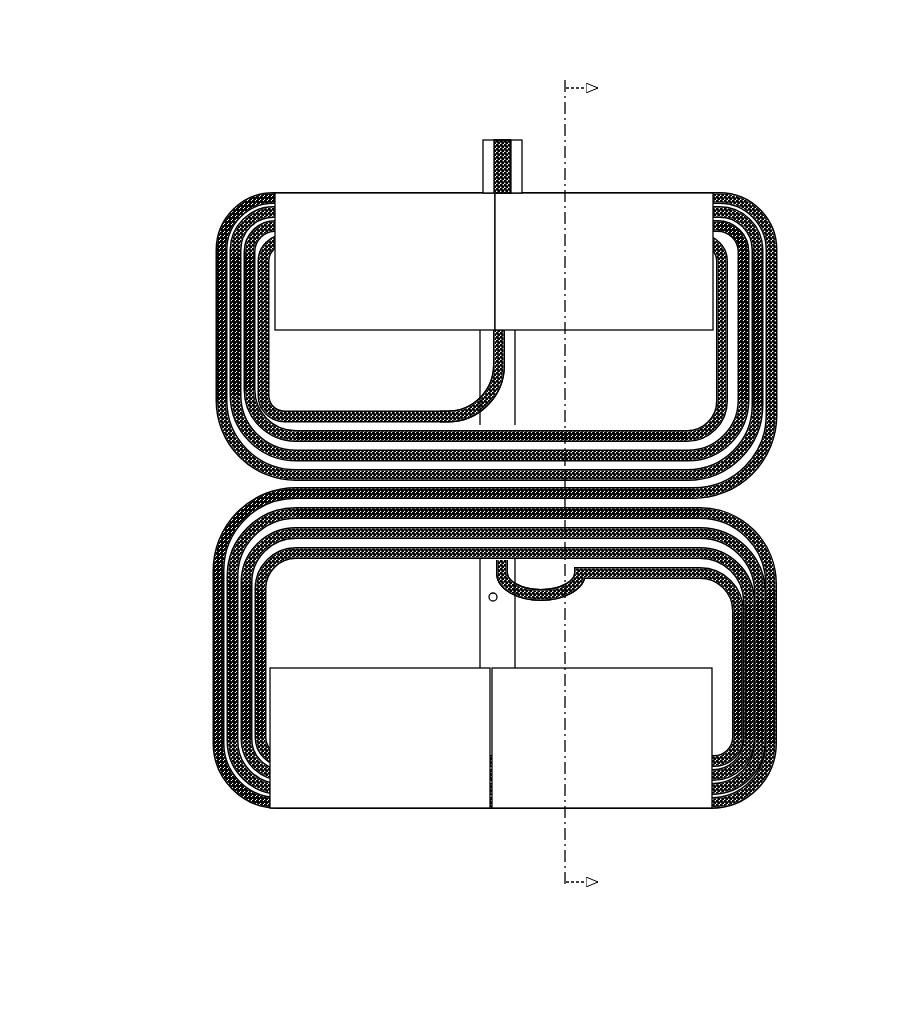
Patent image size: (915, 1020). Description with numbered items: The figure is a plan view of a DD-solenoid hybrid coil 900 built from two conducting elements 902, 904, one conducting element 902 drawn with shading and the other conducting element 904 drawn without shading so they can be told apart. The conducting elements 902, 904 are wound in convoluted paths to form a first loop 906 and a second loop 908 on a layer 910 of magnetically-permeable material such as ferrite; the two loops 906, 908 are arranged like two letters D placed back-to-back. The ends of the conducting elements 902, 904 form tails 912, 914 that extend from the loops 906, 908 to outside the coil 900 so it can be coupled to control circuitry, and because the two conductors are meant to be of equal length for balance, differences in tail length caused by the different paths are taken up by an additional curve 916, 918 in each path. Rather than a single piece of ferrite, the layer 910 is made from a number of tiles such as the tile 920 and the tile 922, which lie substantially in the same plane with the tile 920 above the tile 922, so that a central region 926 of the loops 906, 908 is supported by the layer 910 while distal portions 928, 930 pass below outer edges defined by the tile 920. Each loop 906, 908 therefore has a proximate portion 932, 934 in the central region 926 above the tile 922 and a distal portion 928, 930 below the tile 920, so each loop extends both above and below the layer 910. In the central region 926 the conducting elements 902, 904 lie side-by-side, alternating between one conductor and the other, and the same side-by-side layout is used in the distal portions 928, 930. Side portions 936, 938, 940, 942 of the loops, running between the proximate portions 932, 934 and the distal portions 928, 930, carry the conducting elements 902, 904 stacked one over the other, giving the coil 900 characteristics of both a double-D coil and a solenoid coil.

The DD-solenoid hybrid coil 900 is at (778, 70).
The conducting element 902 is at (218, 577).
The conducting element 904 is at (222, 300).
The first loop 906 is at (467, 630).
The second loop 908 is at (477, 332).
The layer of magnetically-permeable material 910 is at (378, 250).
The tail 912 is at (484, 150).
The tail 914 is at (498, 138).
The additional curve 916 is at (578, 593).
The additional curve 918 is at (464, 392).
The ferrite tile 920 is at (620, 270).
The ferrite tile 922 is at (745, 232).
The central region 926 is at (238, 478).
The distal portion 928 is at (260, 772).
The distal portion 930 is at (262, 212).
The proximate portion 932 is at (436, 520).
The proximate portion 934 is at (405, 448).
The side portion 936 is at (237, 678).
The side portion 938 is at (768, 645).
The side portion 940 is at (237, 350).
The side portion 942 is at (756, 352).